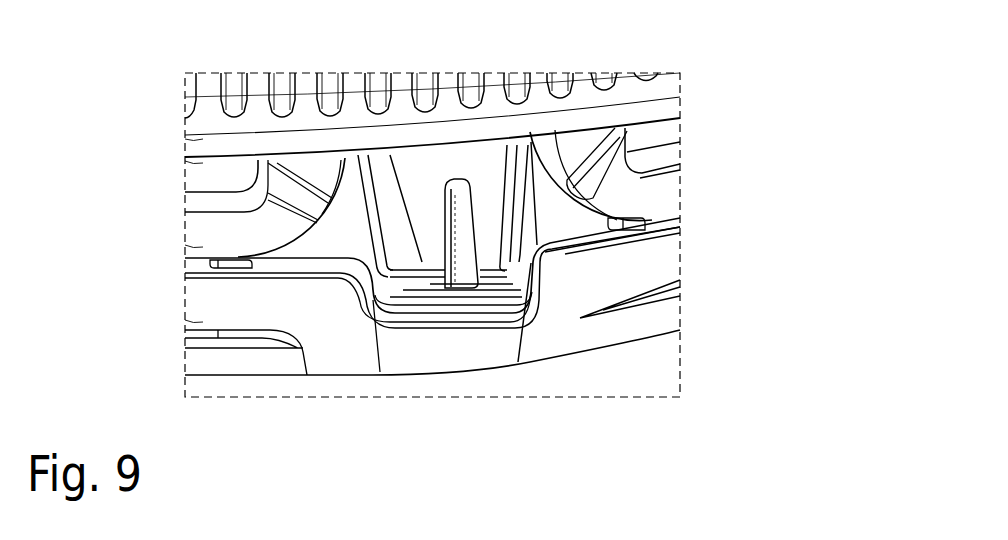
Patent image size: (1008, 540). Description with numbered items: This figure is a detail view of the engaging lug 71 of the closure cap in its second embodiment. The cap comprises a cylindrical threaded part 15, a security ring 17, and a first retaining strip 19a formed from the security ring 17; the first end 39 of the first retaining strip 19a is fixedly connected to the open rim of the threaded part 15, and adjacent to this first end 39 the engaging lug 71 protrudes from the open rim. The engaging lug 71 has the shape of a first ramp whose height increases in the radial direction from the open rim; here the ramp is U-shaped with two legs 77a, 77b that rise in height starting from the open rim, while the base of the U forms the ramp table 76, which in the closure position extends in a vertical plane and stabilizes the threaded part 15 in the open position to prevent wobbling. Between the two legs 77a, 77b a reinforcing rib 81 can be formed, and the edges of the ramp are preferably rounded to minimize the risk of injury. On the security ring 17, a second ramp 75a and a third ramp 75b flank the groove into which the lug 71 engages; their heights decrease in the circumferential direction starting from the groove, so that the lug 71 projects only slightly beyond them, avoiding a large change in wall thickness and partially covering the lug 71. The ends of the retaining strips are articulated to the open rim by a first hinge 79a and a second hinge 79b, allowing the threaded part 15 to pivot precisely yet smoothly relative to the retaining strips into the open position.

The threaded part 15 is at (260, 90).
The first leg of the first ramp 77a is at (390, 152).
The tab 81 is at (460, 180).
The engaging lug 71 is at (483, 217).
The second leg of the first ramp 77b is at (528, 140).
The second hinge 79b is at (598, 170).
The first hinge 79a is at (287, 191).
The first retaining strip 19a is at (203, 248).
The security ring 17 is at (203, 323).
The first end of the first retaining strip 39 is at (278, 232).
The second ramp 75a is at (373, 350).
The ramp table 76 is at (463, 300).
The third ramp 75b is at (540, 302).